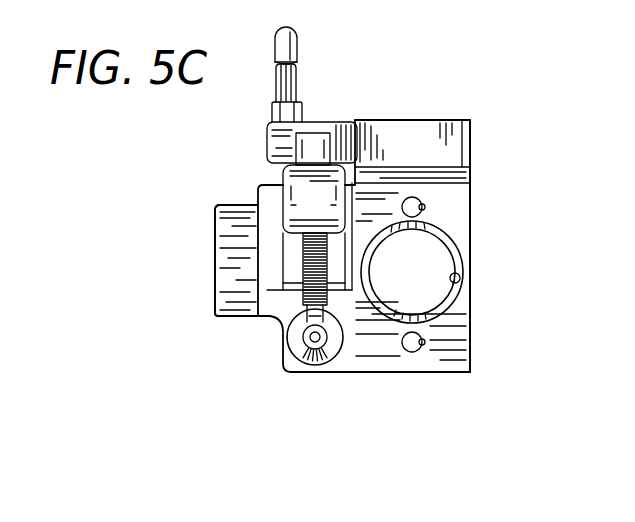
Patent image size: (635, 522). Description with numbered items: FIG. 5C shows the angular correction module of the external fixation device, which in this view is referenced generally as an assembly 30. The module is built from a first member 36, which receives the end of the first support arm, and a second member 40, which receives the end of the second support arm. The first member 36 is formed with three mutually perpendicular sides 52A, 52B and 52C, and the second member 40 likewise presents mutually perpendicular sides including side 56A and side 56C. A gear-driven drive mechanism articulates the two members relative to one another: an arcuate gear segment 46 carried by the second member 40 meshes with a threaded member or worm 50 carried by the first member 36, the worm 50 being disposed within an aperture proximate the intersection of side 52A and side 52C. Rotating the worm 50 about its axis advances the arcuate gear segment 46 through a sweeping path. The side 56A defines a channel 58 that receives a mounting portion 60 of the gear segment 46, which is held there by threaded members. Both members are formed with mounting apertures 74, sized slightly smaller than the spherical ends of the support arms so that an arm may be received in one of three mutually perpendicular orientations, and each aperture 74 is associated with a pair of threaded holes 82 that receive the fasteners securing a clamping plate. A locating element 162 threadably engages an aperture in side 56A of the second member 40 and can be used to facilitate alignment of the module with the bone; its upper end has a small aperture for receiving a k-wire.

The housing assembly 30 is at (524, 112).
The first member 36 is at (458, 226).
The second member 40 is at (450, 116).
The arcuate gear segment 46 is at (318, 142).
The threaded member 50 is at (303, 339).
The side 52A is at (258, 243).
The side 52B is at (459, 318).
The side 52C is at (378, 373).
The side 56A is at (417, 121).
The side 56C is at (472, 262).
The channel 58 is at (297, 142).
The mounting portion 60 is at (330, 152).
The mounting aperture 74 is at (458, 280).
The threaded hole 82 is at (424, 207).
The locating element 162 is at (293, 43).